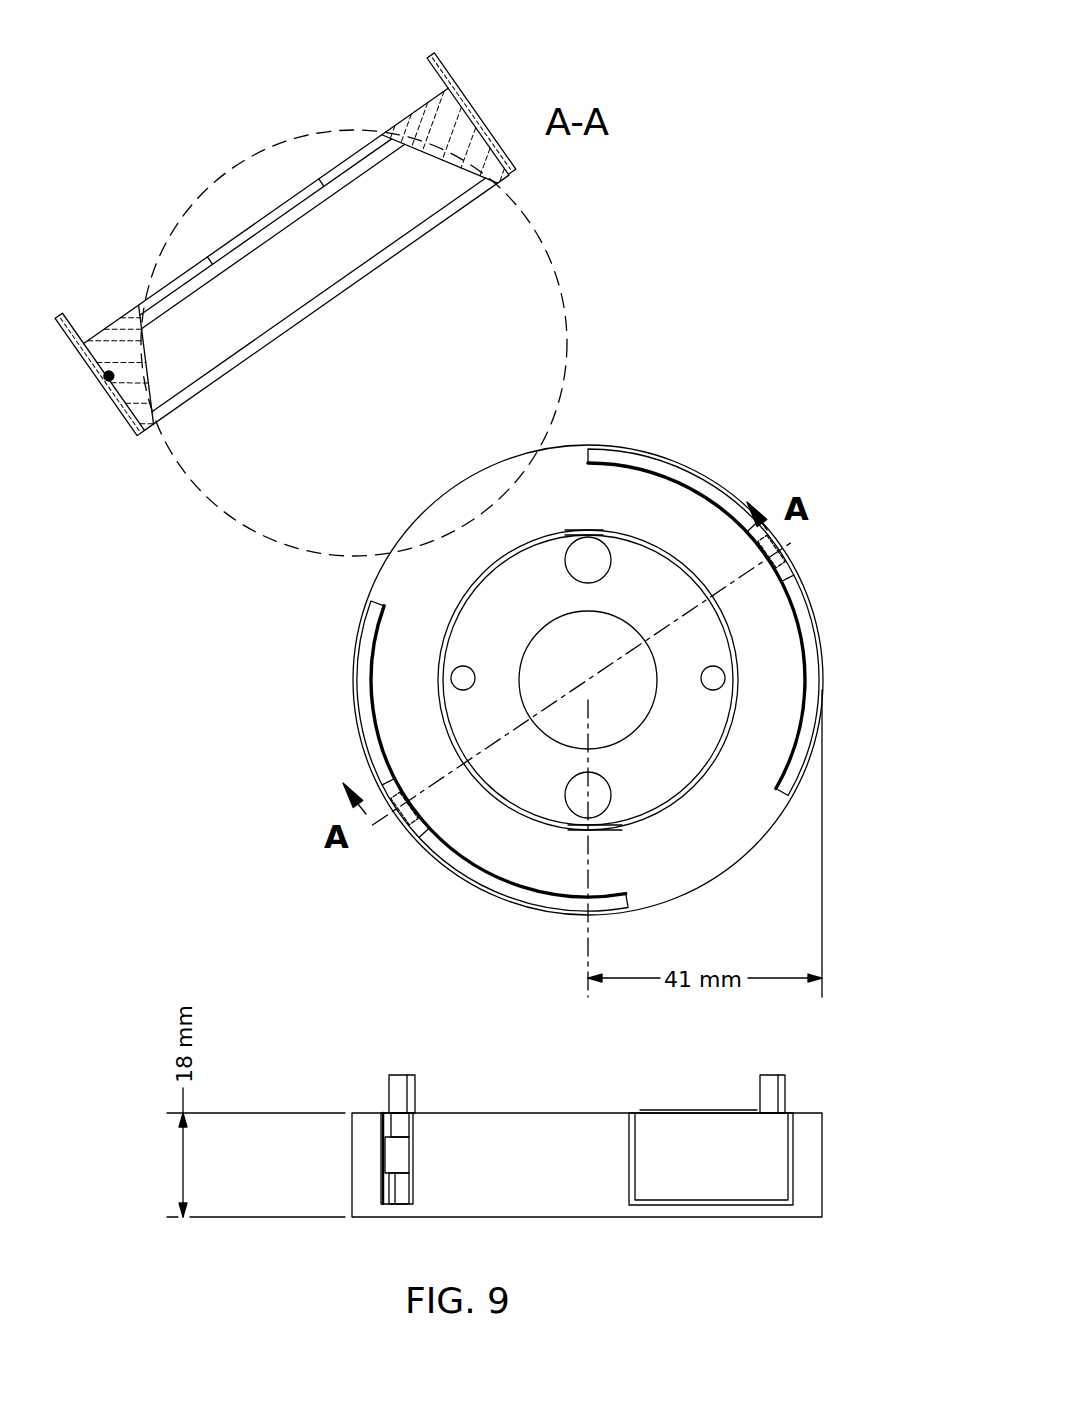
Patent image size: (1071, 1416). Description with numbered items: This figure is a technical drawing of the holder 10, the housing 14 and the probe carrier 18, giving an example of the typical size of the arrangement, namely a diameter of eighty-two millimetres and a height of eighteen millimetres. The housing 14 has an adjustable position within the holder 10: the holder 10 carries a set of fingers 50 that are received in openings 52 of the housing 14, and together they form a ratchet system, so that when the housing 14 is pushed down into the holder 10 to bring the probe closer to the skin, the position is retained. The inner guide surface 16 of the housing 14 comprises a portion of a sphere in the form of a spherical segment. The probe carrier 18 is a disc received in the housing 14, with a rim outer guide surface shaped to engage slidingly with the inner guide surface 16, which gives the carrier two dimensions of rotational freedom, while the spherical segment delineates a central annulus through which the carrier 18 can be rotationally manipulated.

The holder 10 is at (827, 662).
The housing 14 is at (440, 538).
The inner guide surface 16 is at (430, 152).
The probe carrier 18 is at (507, 550).
The fingers 50 is at (780, 547).
The openings 52 is at (109, 371).